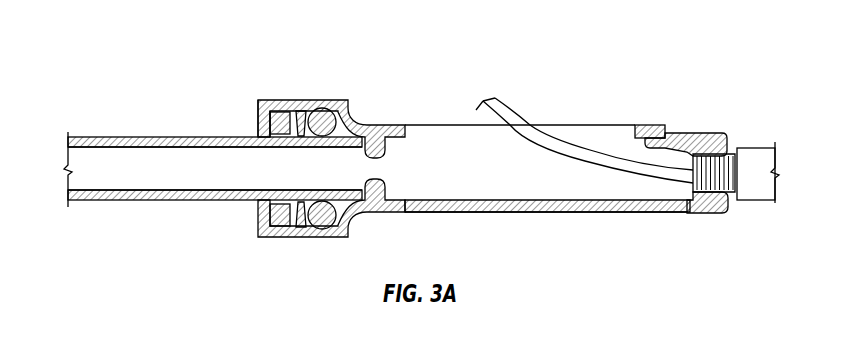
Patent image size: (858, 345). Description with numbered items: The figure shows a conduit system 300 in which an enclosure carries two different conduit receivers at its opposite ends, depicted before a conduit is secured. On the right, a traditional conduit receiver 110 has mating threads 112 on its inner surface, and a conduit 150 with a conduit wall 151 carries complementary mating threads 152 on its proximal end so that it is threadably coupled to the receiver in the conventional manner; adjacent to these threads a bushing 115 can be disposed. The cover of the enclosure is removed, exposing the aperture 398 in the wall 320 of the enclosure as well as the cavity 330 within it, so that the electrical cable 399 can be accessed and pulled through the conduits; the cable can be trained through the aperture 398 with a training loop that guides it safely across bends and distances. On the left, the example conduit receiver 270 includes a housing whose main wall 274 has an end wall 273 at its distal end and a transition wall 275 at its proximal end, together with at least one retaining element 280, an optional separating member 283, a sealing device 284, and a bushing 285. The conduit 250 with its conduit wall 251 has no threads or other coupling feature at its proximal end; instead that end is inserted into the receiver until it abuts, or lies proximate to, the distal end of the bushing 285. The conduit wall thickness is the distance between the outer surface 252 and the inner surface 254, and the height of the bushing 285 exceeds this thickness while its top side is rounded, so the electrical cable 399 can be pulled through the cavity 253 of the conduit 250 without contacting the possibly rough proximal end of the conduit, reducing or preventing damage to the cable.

The conduit system 300 is at (66, 60).
The conduit 250 is at (187, 161).
The conduit wall 251 is at (167, 141).
The outer surface of the conduit wall 252 is at (116, 137).
The cavity of the conduit 253 is at (88, 179).
The inner surface of the conduit wall 254 is at (81, 142).
The conduit receiver 270 is at (306, 187).
The end wall 273 is at (259, 116).
The main wall 274 is at (311, 111).
The transition wall 275 is at (346, 119).
The retaining element 280 is at (279, 109).
The separating member 283 is at (297, 229).
The sealing device 284 is at (322, 128).
The bushing 285 is at (376, 178).
The wall of the enclosure 320 is at (547, 177).
The cavity within the enclosure 330 is at (423, 141).
The aperture 398 is at (456, 129).
The electrical cable 399 is at (507, 101).
The traditional conduit receiver 110 is at (685, 165).
The mating threads 112 is at (706, 150).
The bushing 115 is at (653, 139).
The conduit 150 is at (792, 180).
The conduit wall 151 is at (759, 201).
The mating threads 152 is at (733, 166).